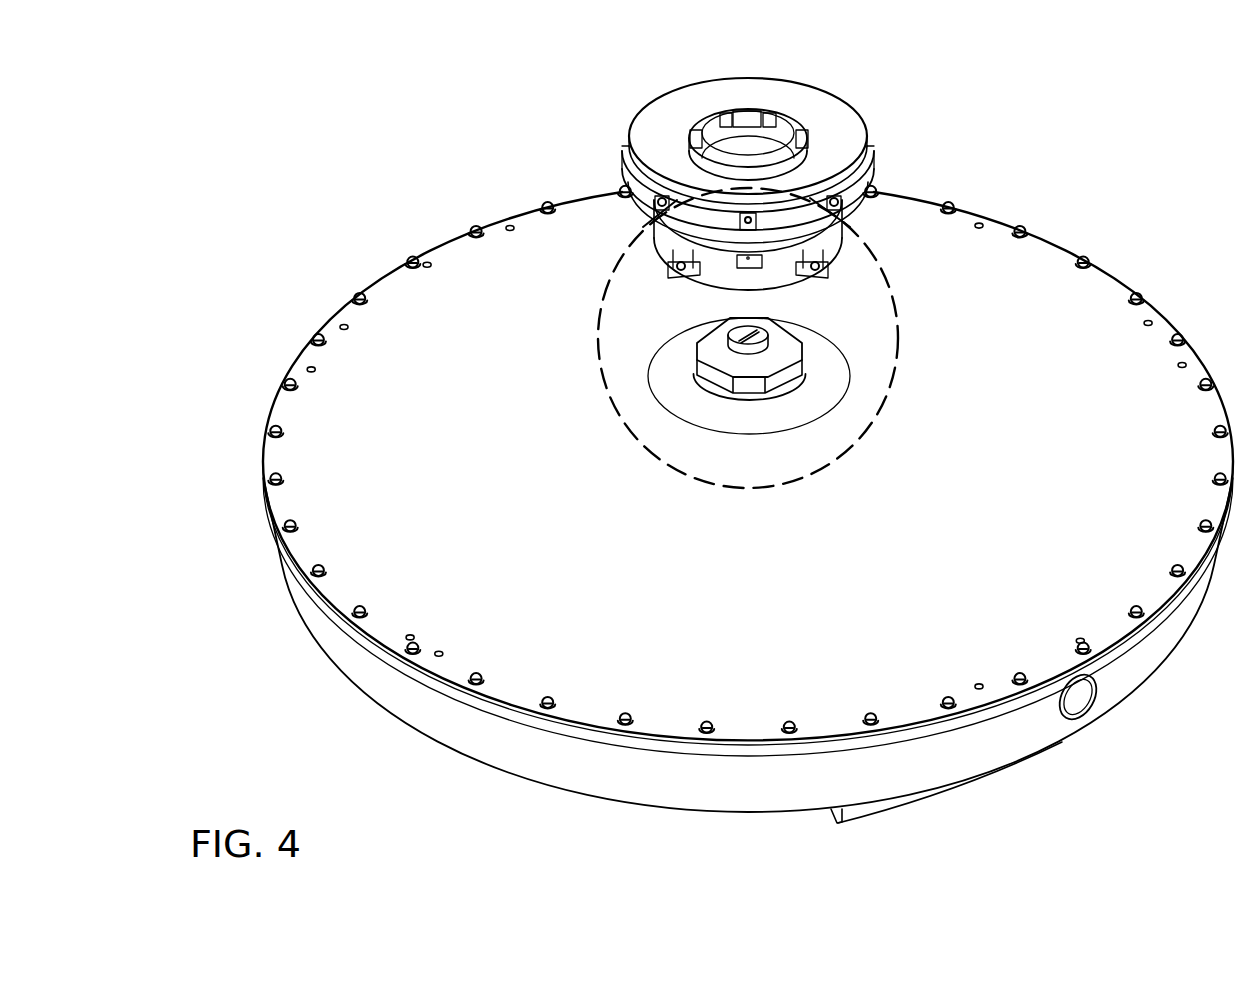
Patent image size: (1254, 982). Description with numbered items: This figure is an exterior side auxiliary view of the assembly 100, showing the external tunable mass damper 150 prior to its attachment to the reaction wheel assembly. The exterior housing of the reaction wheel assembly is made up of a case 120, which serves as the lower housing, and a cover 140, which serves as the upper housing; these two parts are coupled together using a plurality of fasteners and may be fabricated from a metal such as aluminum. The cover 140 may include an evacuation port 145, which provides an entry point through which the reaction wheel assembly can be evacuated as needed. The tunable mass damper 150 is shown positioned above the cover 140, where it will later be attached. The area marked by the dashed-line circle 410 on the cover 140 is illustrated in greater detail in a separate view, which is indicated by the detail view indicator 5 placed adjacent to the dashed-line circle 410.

The vacuum processing apparatus assembly 100 is at (748, 439).
The base housing 120 is at (1155, 661).
The top cover plate 140 is at (457, 268).
The central cap nut 145 is at (750, 398).
The hub ring assembly 150 is at (624, 165).
The detail circle region 410 is at (861, 437).
The FIG. 5 detail view indicator 5 is at (903, 343).